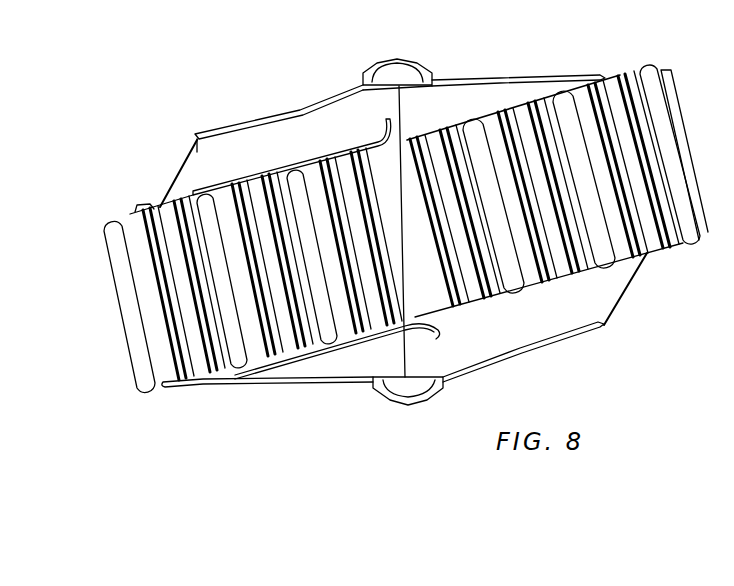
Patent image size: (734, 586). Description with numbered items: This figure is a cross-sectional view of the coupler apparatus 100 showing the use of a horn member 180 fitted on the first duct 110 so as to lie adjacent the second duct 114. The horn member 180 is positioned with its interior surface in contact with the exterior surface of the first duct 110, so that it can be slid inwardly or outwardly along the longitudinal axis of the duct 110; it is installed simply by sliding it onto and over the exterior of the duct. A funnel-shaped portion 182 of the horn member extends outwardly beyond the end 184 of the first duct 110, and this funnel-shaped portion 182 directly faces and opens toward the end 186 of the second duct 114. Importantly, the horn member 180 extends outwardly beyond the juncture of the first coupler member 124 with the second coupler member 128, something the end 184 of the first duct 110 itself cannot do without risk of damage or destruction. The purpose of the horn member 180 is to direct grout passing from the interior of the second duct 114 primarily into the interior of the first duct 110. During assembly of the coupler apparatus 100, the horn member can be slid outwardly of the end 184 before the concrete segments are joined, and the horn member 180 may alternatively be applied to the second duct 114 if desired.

The coupler apparatus 100 is at (541, 56).
The first duct 110 is at (113, 290).
The second duct 114 is at (679, 158).
The first coupler member 124 is at (311, 96).
The second coupler member 128 is at (487, 78).
The horn member 180 is at (323, 153).
The funnel-shaped portion 182 is at (428, 335).
The end of the first duct 184 is at (373, 208).
The end of the second duct 186 is at (406, 141).